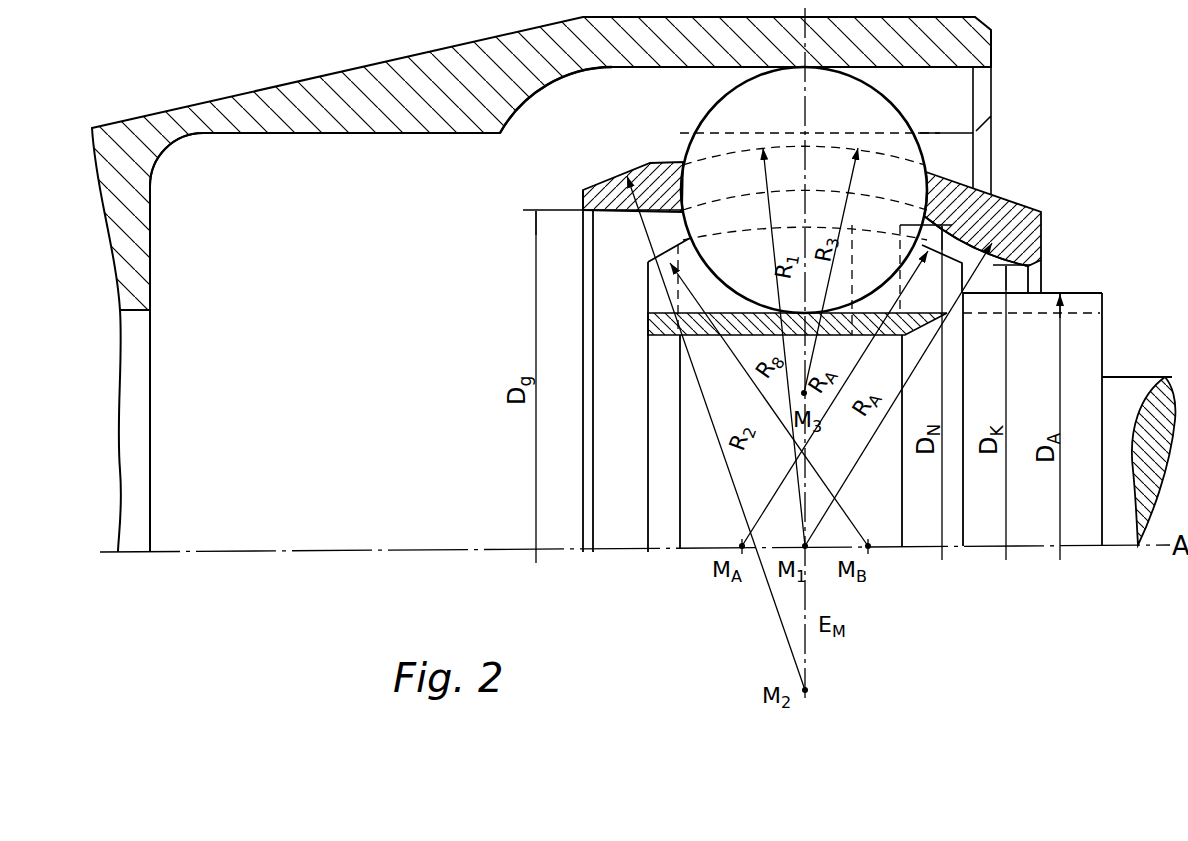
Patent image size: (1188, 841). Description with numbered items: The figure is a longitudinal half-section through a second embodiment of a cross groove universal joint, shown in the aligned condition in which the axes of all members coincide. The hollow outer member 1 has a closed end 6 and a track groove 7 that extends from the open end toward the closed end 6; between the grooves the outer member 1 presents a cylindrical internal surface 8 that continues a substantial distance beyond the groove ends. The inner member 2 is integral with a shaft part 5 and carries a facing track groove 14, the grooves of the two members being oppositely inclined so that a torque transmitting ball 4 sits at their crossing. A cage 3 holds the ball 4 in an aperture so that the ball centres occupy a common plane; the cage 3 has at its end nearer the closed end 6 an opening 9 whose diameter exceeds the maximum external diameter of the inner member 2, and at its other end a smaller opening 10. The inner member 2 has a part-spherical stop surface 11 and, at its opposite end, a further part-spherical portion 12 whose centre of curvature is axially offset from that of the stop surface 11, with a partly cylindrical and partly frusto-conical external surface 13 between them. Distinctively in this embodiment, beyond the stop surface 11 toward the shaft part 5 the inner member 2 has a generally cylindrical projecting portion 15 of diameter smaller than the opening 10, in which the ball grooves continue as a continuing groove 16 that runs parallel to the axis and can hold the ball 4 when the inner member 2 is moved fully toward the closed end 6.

The outer member 1 is at (913, 44).
The inner member 2 is at (660, 497).
The cage 3 is at (992, 200).
The torque transmitting ball 4 is at (870, 108).
The shaft part 5 is at (1128, 530).
The closed end 6 is at (132, 312).
The track groove 7 is at (553, 95).
The cylindrical internal surface 8 is at (343, 138).
The opening 9 is at (597, 483).
The opening 10 is at (1033, 280).
The part-spherical stop surface 11 is at (998, 223).
The part-spherical portion 12 is at (653, 263).
The external surface 13 is at (748, 235).
The track groove 14 is at (698, 281).
The projecting portion 15 is at (1085, 351).
The continuing groove 16 is at (1084, 300).